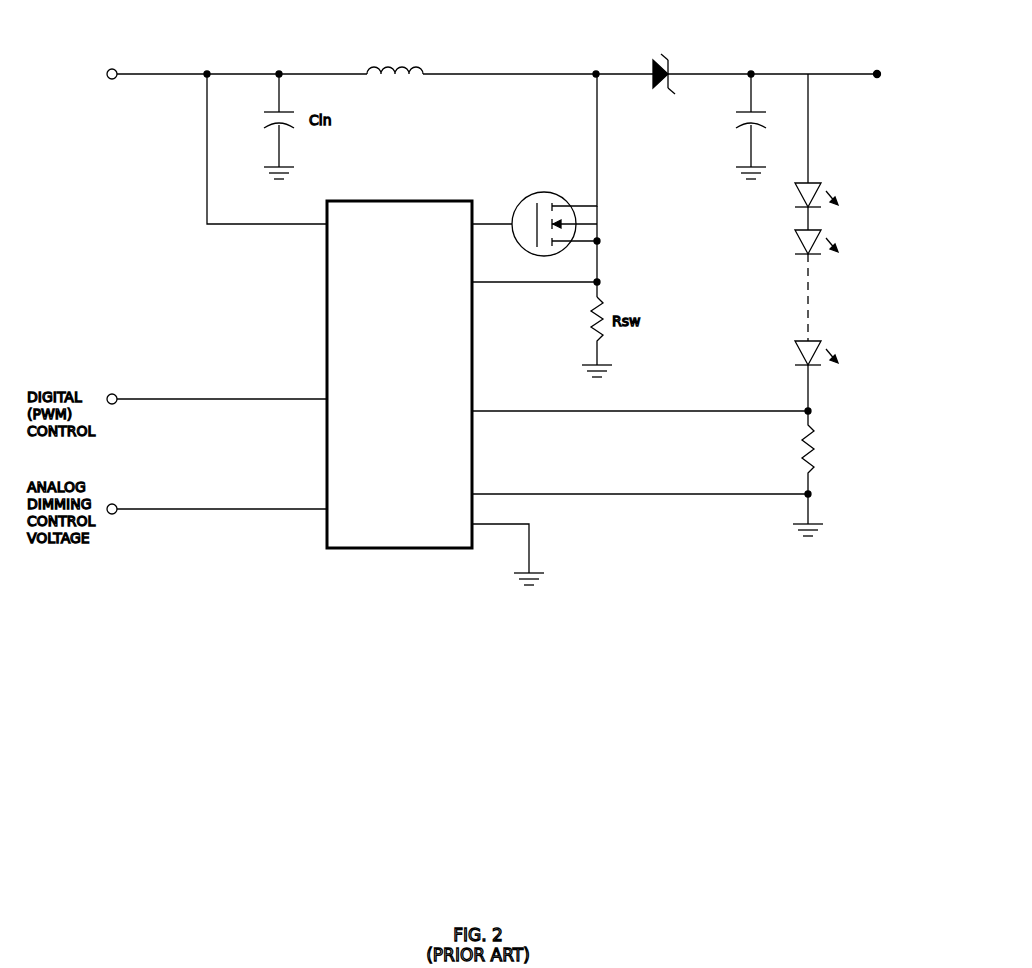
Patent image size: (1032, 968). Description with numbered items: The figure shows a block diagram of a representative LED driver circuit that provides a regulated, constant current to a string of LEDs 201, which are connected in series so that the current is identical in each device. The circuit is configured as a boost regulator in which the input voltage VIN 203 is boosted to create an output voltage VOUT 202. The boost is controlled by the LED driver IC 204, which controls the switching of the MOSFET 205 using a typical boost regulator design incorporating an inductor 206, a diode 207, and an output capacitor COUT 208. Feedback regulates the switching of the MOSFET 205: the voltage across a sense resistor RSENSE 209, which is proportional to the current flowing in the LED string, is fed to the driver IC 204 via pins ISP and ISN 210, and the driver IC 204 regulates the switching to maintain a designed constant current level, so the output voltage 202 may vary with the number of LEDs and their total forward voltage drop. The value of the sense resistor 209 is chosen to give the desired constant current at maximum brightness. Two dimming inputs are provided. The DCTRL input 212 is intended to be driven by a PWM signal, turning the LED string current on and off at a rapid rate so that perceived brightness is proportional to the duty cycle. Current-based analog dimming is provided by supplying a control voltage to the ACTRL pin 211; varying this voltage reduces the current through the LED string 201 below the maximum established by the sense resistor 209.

The LEDs 201 is at (829, 242).
The output voltage VOUT 202 is at (895, 69).
The input voltage VIN 203 is at (88, 71).
The LED driver IC 204 is at (399, 361).
The MOSFET Q1 205 is at (556, 185).
The inductor L1 206 is at (395, 43).
The diode D1 207 is at (657, 49).
The output capacitor COUT 208 is at (728, 126).
The sense resistor RSENSE 209 is at (778, 472).
The pins ISP and ISN 210 is at (640, 452).
The ACTRL pin 211 is at (217, 501).
The DCTRL input 212 is at (217, 391).